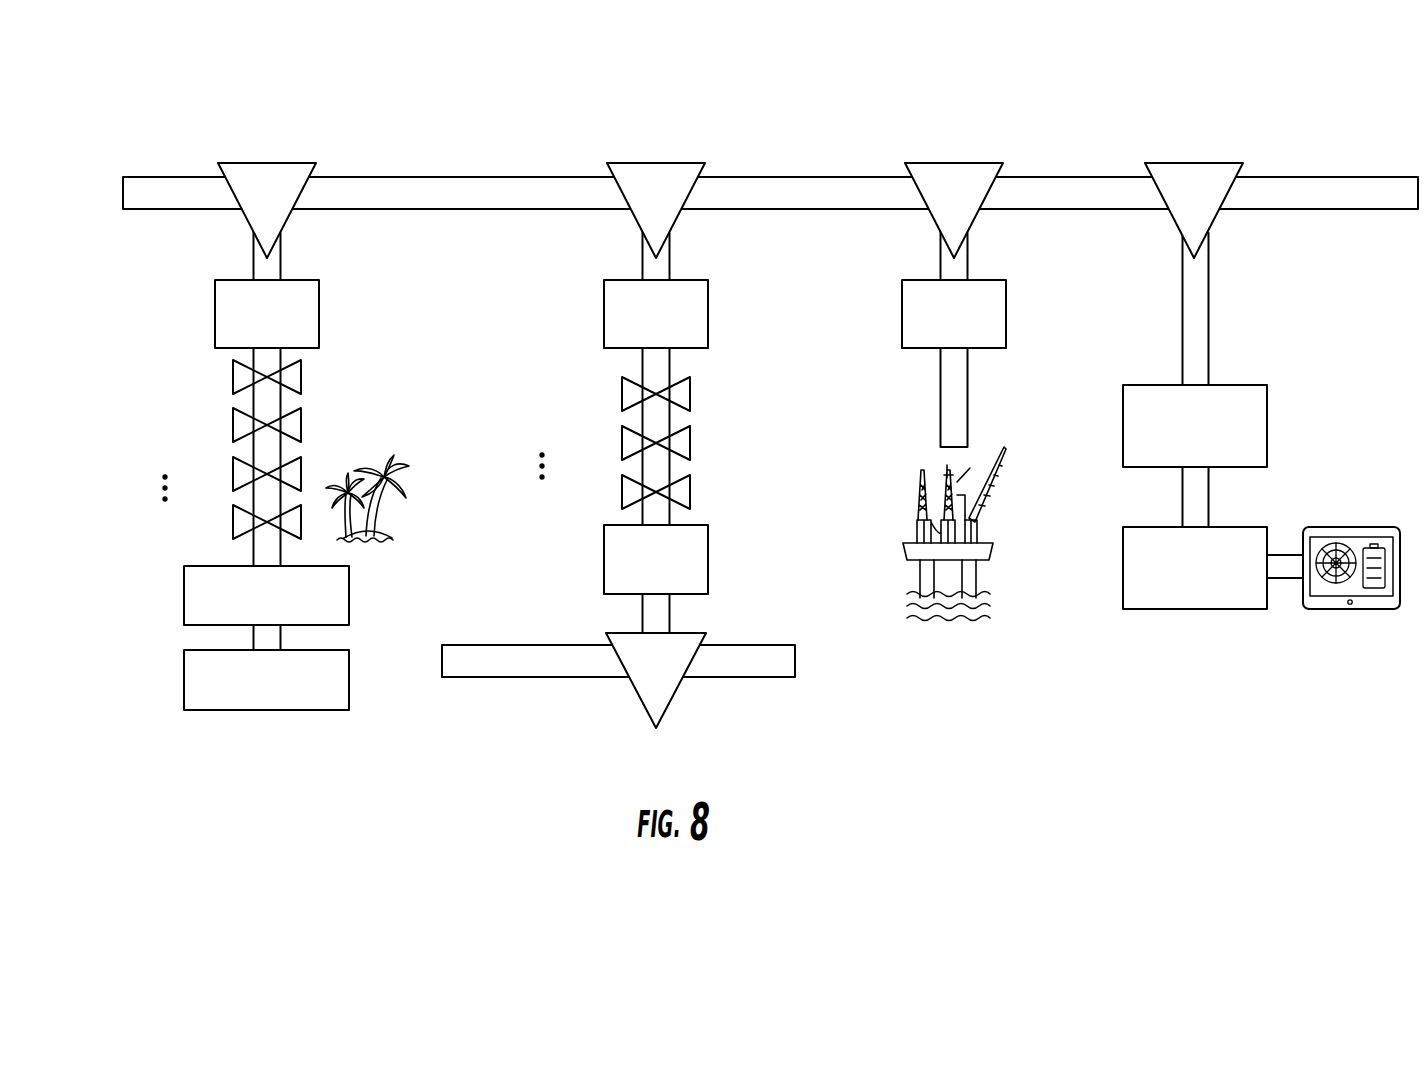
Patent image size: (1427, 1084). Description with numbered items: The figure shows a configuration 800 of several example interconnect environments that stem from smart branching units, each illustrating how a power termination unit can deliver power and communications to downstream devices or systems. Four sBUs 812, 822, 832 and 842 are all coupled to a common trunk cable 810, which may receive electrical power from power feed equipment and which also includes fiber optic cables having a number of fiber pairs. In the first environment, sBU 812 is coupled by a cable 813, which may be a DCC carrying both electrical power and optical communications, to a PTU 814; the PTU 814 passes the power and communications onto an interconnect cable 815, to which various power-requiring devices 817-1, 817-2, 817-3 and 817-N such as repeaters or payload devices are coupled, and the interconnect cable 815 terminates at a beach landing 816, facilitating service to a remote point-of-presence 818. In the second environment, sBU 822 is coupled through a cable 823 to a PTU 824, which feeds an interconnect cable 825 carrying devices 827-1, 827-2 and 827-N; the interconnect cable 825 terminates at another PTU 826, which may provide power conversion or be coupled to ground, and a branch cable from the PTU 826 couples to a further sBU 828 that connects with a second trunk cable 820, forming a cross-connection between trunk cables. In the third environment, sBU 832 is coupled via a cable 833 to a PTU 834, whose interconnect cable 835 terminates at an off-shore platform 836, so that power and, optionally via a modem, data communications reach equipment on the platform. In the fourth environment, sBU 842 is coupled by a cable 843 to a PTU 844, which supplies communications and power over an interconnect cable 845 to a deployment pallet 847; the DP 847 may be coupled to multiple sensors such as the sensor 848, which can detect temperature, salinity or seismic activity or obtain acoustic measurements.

The configuration 800 is at (830, 75).
The trunk cable 810 is at (445, 175).
The sBU 812 is at (253, 160).
The cable 813 is at (313, 246).
The PTU 814 is at (350, 296).
The interconnect cable 815 is at (372, 563).
The beach landing 816 is at (184, 596).
The device 817-1 is at (233, 375).
The device 817-2 is at (233, 422).
The device 817-3 is at (233, 468).
The device 817-N is at (233, 522).
The remote point-of-presence 818 is at (306, 750).
The trunk cable 820 is at (537, 643).
The sBU 822 is at (642, 160).
The cable 823 is at (702, 246).
The PTU 824 is at (738, 296).
The interconnect cable 825 is at (717, 376).
The PTU 826 is at (738, 540).
The device 827-1 is at (623, 392).
The device 827-2 is at (623, 445).
The device 827-N is at (623, 493).
The sBU 828 is at (710, 722).
The sBU 832 is at (940, 160).
The cable 833 is at (998, 246).
The PTU 834 is at (1035, 296).
The interconnect cable 835 is at (1015, 400).
The off-shore platform 836 is at (1005, 660).
The sBU 842 is at (1181, 160).
The cable 843 is at (1245, 313).
The PTU 844 is at (1302, 392).
The interconnect cable 845 is at (1245, 493).
The deployment pallet 847 is at (1203, 635).
The sensor 848 is at (1360, 645).